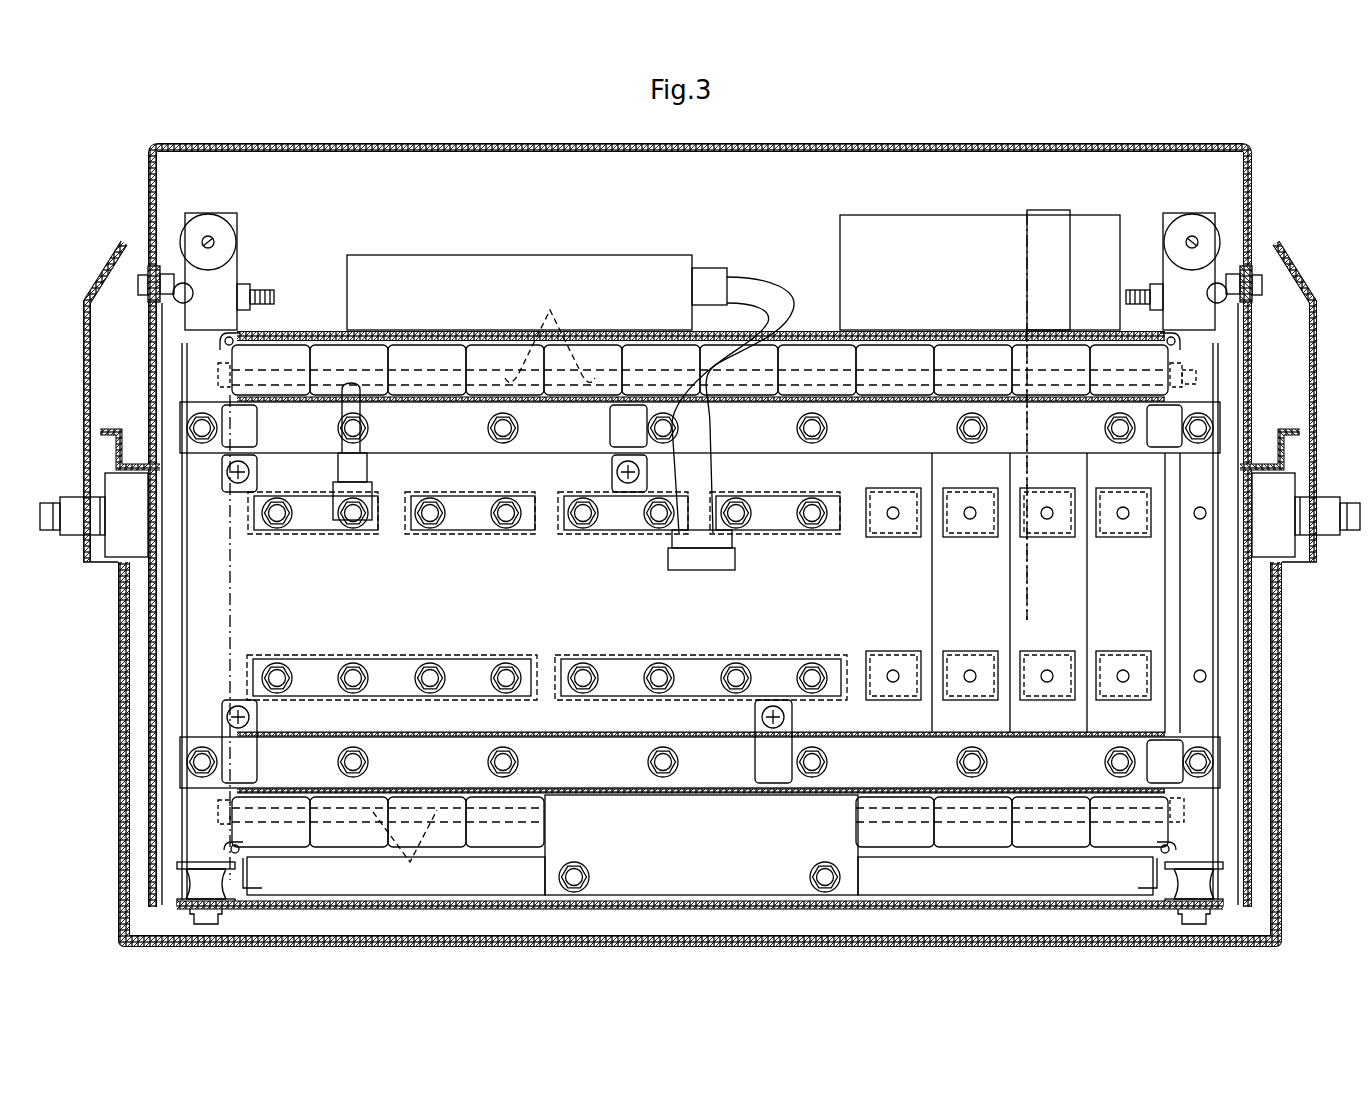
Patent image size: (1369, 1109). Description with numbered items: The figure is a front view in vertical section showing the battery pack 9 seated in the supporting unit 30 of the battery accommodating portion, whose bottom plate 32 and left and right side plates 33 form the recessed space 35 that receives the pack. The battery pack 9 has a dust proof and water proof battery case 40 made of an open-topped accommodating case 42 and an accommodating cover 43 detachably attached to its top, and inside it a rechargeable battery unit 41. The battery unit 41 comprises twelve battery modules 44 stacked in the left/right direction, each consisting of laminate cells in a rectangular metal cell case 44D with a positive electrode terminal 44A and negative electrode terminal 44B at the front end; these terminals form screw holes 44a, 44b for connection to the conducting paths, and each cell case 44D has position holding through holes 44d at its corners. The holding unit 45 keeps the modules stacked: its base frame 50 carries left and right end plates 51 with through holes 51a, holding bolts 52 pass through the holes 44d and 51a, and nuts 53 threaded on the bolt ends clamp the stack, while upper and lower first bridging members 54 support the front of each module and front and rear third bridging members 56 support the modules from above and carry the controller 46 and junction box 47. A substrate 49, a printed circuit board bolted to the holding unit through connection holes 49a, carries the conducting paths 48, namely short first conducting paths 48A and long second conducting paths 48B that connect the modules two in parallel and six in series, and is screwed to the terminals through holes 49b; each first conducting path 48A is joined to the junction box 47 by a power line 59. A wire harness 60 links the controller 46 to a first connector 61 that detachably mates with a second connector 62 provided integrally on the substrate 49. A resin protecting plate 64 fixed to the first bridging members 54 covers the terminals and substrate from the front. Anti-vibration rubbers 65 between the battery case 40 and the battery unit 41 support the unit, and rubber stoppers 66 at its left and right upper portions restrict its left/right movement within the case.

The battery pack 9 is at (103, 168).
The supporting unit 30 is at (1287, 258).
The bottom plate 32 is at (1220, 948).
The side plate 33 is at (112, 653).
The recessed space 35 is at (1265, 237).
The battery case 40 is at (700, 542).
The battery unit 41 is at (326, 262).
The accommodating case 42 is at (992, 913).
The accommodating cover 43 is at (1073, 145).
The battery module 44 is at (700, 535).
The positive electrode terminal 44A is at (597, 487).
The negative electrode terminal 44B is at (487, 495).
The cell case 44D is at (503, 352).
The position holding through hole 44d is at (484, 591).
The screw hole 44a is at (970, 508).
The screw hole 44b is at (960, 705).
The holding unit 45 is at (293, 325).
The controller 46 is at (483, 258).
The junction box 47 is at (1093, 222).
The conducting path 48 is at (807, 489).
The first conducting path 48A is at (377, 520).
The second conducting path 48B is at (1307, 697).
The substrate 49 is at (215, 707).
The connection hole 49a is at (1247, 445).
The through hole 49b is at (1026, 596).
The base frame 50 is at (507, 892).
The end plate 51 is at (190, 814).
The through hole 51a is at (237, 378).
The holding bolt 52 is at (220, 375).
The nut 53 is at (1195, 375).
The first bridging member 54 is at (200, 432).
The third bridging member 56 is at (888, 330).
The power line 59 is at (343, 407).
The wire harness 60 is at (763, 283).
The first connector 61 is at (670, 537).
The second connector 62 is at (700, 570).
The protecting plate 64 is at (555, 740).
The anti-vibration rubber 65 is at (208, 228).
The rubber stopper 66 is at (182, 300).